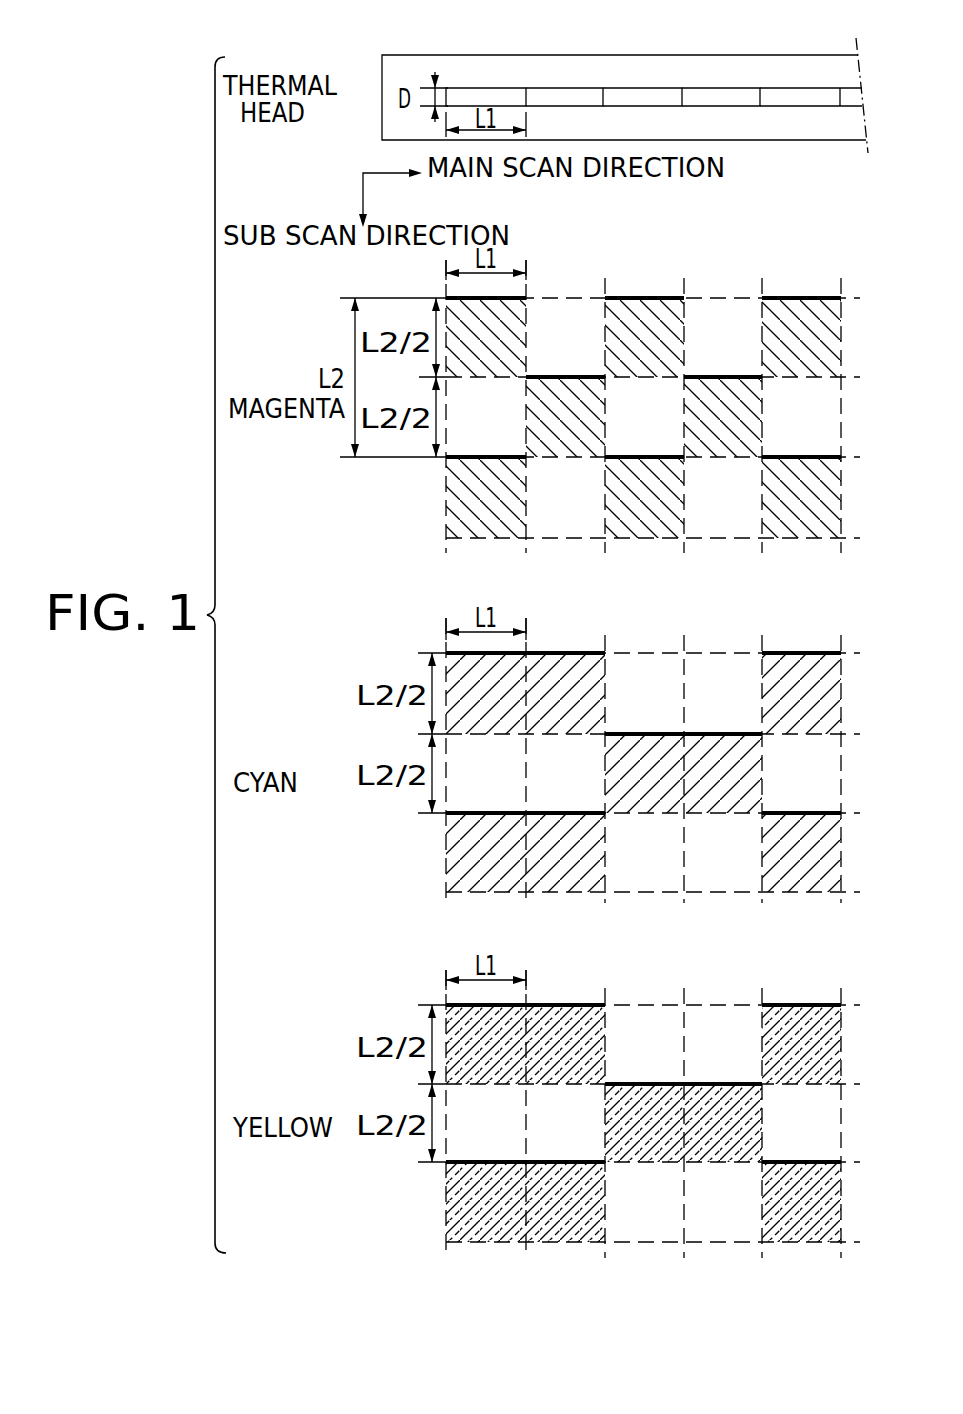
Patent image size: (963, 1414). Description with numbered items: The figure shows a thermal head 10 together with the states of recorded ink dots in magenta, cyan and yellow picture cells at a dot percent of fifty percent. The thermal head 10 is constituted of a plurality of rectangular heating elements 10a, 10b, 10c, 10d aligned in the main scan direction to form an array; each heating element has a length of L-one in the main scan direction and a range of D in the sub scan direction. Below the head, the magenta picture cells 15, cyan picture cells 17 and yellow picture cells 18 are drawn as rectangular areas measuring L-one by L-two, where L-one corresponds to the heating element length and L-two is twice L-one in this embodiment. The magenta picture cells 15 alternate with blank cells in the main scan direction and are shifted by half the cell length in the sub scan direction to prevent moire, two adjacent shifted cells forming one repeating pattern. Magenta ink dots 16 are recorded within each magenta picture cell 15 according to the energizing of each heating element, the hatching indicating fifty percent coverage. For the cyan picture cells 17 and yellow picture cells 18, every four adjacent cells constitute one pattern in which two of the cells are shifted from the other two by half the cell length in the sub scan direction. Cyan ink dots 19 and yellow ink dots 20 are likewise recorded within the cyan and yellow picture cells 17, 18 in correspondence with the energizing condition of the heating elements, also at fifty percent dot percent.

The thermal head 10 is at (639, 78).
The heating element 10a is at (485, 96).
The heating element 10b is at (565, 96).
The heating element 10c is at (660, 96).
The heating element 10d is at (738, 96).
The magenta picture cell 15 is at (720, 370).
The magenta ink dot 16 is at (748, 430).
The cyan picture cell 17 is at (646, 728).
The yellow picture cell 18 is at (640, 1078).
The cyan ink dot 19 is at (755, 788).
The yellow ink dot 20 is at (758, 1128).